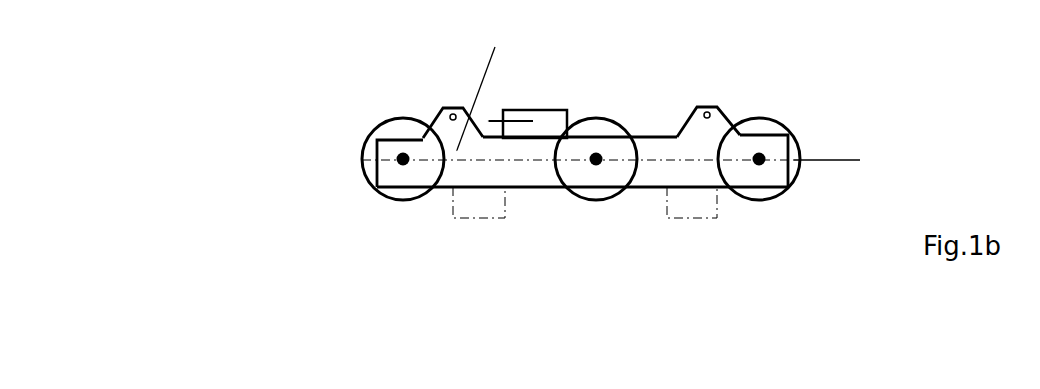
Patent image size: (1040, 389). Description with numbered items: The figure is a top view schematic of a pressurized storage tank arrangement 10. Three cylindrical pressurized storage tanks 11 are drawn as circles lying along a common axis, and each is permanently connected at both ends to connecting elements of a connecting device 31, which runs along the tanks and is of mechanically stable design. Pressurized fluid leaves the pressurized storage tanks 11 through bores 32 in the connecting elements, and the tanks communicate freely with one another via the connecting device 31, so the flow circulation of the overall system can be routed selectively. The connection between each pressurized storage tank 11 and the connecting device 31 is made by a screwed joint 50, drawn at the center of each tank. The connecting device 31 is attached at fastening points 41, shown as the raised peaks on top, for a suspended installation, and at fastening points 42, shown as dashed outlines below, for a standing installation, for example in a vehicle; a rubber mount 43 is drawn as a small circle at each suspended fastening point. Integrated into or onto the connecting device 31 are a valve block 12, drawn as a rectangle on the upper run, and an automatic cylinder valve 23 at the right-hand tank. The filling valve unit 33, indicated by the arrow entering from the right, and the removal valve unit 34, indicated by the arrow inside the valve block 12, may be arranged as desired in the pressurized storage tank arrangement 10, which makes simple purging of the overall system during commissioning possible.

The pressurized storage tank arrangement 10 is at (310, 52).
The pressurized storage tank 11 is at (362, 156).
The valve block 12 is at (547, 108).
The cylinder valve 23 is at (771, 173).
The connecting device 31 is at (646, 136).
The bore 32 is at (664, 158).
The filling valve unit 33 is at (846, 161).
The removal valve unit 34 is at (496, 107).
The fastening point, suspended embodiment 41 is at (441, 106).
The fastening point, standing embodiment 42 is at (462, 221).
The rubber mount 43 is at (453, 112).
The screwed joint 50 is at (400, 162).